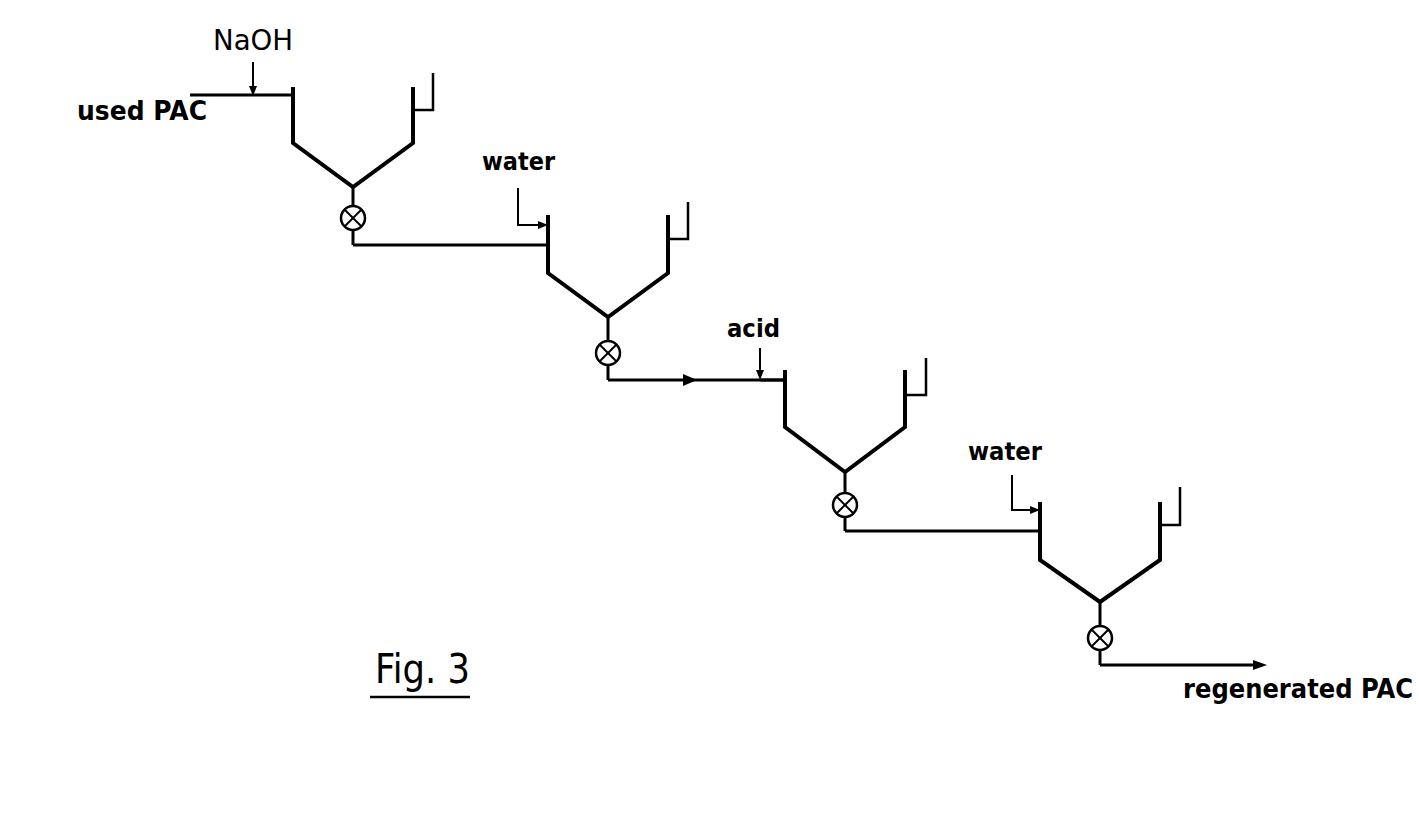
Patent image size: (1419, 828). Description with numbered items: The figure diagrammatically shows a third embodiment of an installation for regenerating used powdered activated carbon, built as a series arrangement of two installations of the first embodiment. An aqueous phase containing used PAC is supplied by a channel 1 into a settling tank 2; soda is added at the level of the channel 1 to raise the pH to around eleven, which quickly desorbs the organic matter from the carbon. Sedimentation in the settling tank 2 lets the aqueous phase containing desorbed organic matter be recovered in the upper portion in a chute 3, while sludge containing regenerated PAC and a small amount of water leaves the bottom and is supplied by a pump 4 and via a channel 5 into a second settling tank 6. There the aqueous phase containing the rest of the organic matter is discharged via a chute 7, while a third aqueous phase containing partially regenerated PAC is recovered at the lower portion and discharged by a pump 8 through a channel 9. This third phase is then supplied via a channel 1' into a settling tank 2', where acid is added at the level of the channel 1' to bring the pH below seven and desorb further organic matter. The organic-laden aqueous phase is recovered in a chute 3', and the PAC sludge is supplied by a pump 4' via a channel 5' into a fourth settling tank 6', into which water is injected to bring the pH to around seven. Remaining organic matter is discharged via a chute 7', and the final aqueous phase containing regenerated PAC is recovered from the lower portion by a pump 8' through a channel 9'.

The channel 1 is at (241, 142).
The settling tank 2 is at (353, 104).
The chute 3 is at (474, 93).
The pump 4 is at (303, 216).
The channel 5 is at (450, 196).
The second settling tank 6 is at (608, 227).
The chute 7 is at (728, 225).
The pump 8 is at (558, 348).
The channel 9 is at (696, 332).
The channel 1' is at (743, 425).
The settling tank 2' is at (845, 389).
The chute 3' is at (967, 379).
The pump 4' is at (793, 501).
The channel 5' is at (942, 481).
The fourth settling tank 6' is at (1100, 512).
The chute 7' is at (1222, 508).
The pump 8' is at (1048, 633).
The channel 9' is at (1183, 617).